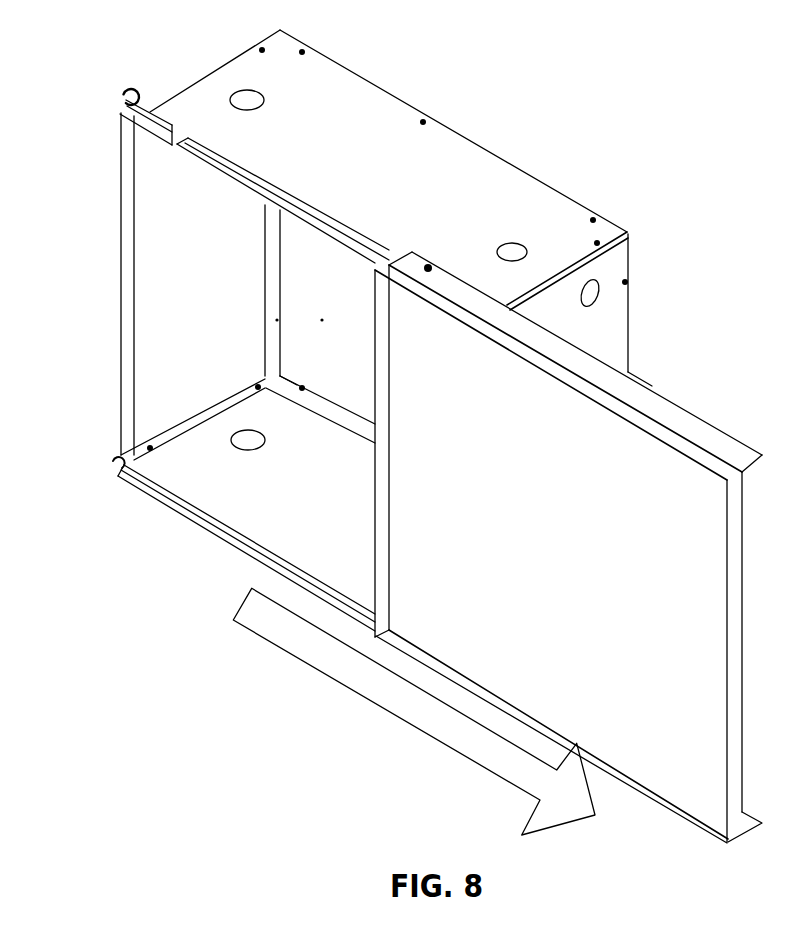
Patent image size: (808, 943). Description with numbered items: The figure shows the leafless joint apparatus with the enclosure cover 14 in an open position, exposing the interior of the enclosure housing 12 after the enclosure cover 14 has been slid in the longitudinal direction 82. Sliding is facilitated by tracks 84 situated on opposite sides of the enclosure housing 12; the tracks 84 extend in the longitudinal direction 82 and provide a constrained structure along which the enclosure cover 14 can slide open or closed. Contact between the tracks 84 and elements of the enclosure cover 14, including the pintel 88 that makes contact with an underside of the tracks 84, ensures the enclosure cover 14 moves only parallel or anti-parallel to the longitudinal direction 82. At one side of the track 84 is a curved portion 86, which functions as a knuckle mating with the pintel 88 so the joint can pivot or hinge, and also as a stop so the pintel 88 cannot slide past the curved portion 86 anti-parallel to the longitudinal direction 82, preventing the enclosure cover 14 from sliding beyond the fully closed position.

The enclosure housing 12 is at (494, 172).
The enclosure cover 14 is at (566, 542).
The longitudinal direction 82 is at (414, 711).
The track 84 is at (228, 152).
The curved portion 86 is at (122, 93).
The pintel 88 is at (432, 264).